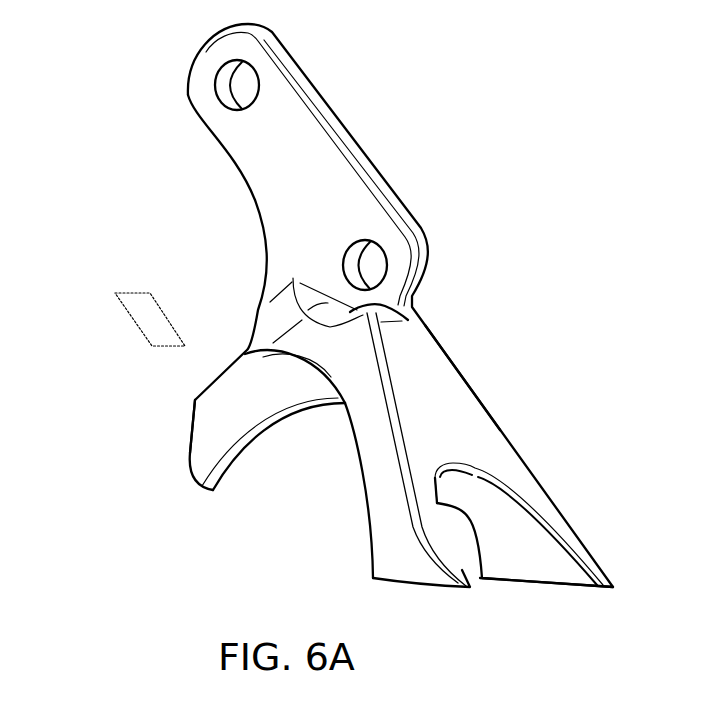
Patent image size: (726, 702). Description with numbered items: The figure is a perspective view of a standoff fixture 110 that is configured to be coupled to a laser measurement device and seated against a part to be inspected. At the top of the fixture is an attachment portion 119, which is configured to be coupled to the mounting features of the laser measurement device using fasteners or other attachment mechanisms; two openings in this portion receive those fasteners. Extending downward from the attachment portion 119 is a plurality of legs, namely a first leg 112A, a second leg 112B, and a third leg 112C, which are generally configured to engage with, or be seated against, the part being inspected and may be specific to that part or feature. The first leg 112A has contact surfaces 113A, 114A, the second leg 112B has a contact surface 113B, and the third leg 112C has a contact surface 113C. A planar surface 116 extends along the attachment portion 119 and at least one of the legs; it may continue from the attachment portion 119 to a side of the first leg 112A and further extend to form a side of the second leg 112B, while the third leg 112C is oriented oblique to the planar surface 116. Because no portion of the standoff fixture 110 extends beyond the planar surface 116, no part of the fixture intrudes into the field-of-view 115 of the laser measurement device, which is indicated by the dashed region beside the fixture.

The standoff fixture 110 is at (529, 189).
The attachment portion 119 is at (318, 174).
The field-of-view 115 is at (133, 310).
The planar surface 116 is at (452, 370).
The contact surface 113A is at (190, 434).
The contact surface 113B is at (553, 584).
The contact surface 113C is at (400, 583).
The first leg 112A is at (203, 453).
The second leg 112B is at (517, 578).
The third leg 112C is at (412, 528).
The contact surface 114A is at (196, 488).